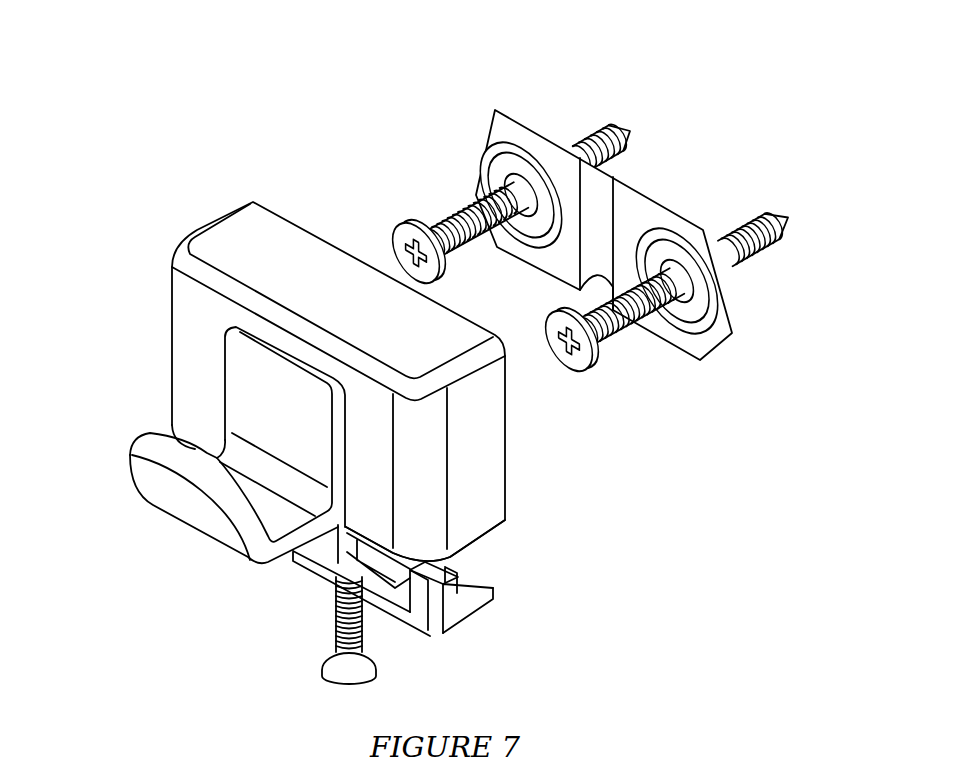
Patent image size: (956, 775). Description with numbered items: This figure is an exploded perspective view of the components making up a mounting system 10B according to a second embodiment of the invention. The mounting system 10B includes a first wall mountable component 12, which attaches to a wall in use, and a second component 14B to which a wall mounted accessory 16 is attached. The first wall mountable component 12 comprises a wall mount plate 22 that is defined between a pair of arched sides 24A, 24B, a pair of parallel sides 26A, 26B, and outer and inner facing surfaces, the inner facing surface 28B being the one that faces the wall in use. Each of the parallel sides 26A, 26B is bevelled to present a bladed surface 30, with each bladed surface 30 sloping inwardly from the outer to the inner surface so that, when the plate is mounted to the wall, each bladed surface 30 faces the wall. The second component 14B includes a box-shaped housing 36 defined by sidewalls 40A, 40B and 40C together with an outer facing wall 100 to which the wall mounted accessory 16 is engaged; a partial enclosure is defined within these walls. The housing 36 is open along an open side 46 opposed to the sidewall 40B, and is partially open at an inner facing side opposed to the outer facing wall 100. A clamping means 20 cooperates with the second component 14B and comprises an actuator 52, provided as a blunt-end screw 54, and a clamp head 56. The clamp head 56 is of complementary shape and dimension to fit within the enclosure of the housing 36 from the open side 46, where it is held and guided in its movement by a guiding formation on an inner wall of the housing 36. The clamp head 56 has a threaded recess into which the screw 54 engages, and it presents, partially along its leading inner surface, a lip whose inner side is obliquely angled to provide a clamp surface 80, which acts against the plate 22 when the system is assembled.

The mounting system 10B is at (560, 453).
The first wall mountable component 12 is at (489, 90).
The second component 14B is at (150, 210).
The wall mounted accessory 16 is at (182, 548).
The clamping means 20 is at (328, 692).
The wall mount plate 22 is at (640, 215).
The arched side 24A is at (480, 162).
The arched side 24B is at (728, 292).
The parallel side 26A is at (712, 222).
The parallel side 26B is at (660, 338).
The inner facing surface 28B is at (538, 150).
The bladed surface 30 is at (618, 170).
The box-shaped housing 36 is at (465, 527).
The sidewall 40A is at (222, 205).
The sidewall 40B is at (298, 250).
The sidewall 40C is at (477, 473).
The open side 46 is at (490, 556).
The actuator 52 is at (342, 620).
The blunt-end screw 54 is at (349, 614).
The clamp head 56 is at (417, 613).
The clamp surface 80 is at (455, 583).
The outer facing wall 100 is at (195, 348).